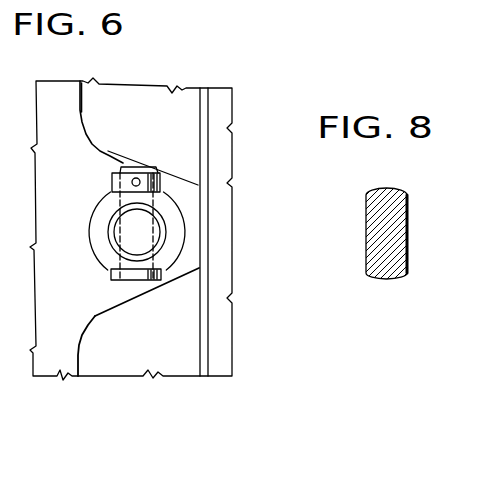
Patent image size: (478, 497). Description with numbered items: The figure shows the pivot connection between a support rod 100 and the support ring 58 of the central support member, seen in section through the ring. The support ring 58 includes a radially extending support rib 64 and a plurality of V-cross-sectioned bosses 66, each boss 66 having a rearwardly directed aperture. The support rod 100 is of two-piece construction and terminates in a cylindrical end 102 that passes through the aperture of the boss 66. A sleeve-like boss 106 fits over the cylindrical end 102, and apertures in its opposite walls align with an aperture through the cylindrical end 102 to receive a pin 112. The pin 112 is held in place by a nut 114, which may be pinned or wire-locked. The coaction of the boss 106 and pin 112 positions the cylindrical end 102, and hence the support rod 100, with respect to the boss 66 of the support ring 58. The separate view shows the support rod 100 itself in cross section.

In FIG. 6, the support ring 58 is at (168, 383).
In FIG. 6, the support rib 64 is at (171, 335).
In FIG. 6, the boss 66 is at (97, 308).
In FIG. 8, the support rod 100 is at (392, 222).
In FIG. 6, the cylindrical end 102 is at (143, 221).
In FIG. 6, the boss 106 is at (177, 238).
In FIG. 6, the pin 112 is at (125, 279).
In FIG. 6, the nut 114 is at (128, 178).